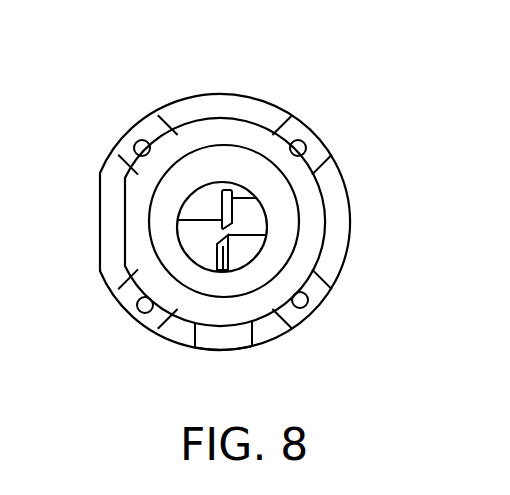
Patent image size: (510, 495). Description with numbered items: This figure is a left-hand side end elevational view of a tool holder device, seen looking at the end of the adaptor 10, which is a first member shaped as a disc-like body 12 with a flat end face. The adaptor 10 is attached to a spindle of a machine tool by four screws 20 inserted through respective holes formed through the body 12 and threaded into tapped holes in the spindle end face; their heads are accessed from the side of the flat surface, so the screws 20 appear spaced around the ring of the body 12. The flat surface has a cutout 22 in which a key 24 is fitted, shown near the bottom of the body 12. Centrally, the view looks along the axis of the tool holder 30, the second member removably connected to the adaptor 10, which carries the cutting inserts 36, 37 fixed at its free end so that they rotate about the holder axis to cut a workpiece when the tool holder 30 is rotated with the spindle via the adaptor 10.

The adaptor 10 is at (302, 96).
The body 12 is at (335, 202).
The screws 20 is at (133, 142).
The cutout 22 is at (252, 347).
The key 24 is at (230, 345).
The tool holder 30 is at (157, 225).
The cutting insert 36 is at (223, 271).
The cutting insert 37 is at (228, 188).